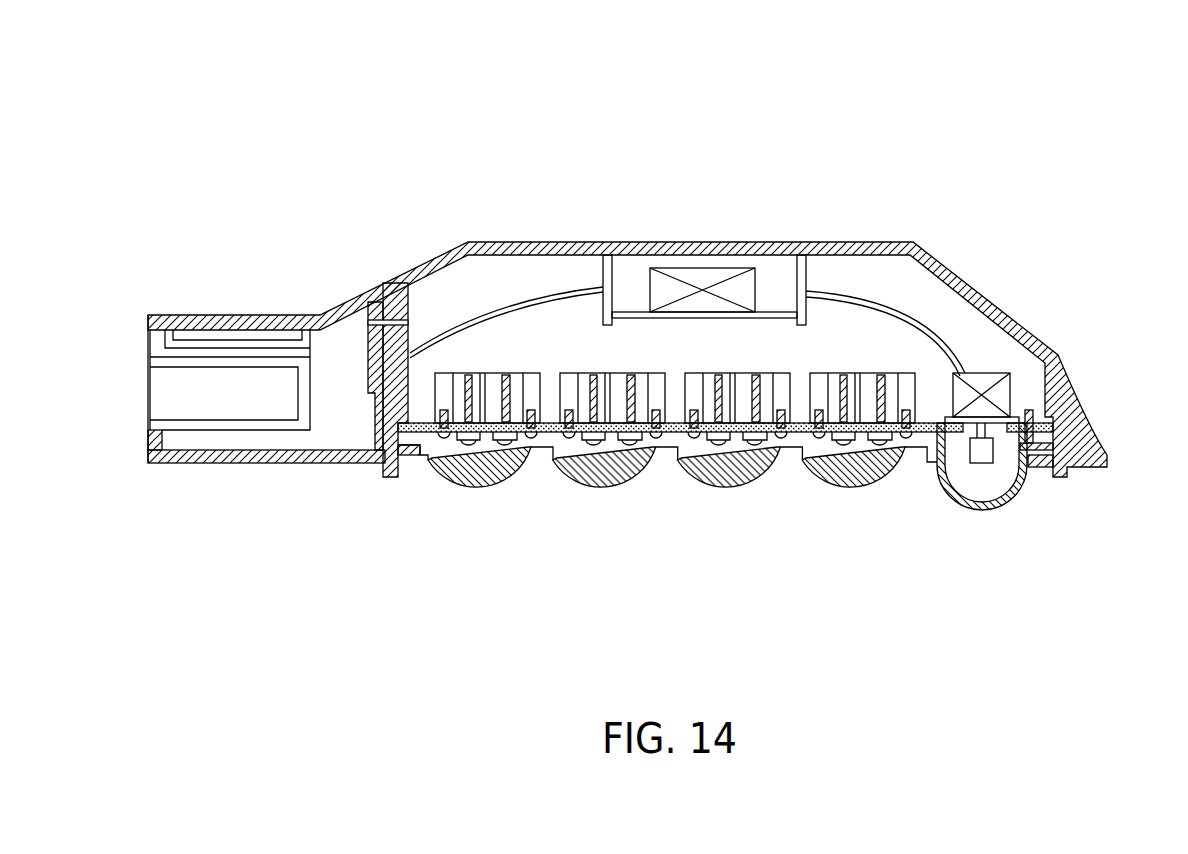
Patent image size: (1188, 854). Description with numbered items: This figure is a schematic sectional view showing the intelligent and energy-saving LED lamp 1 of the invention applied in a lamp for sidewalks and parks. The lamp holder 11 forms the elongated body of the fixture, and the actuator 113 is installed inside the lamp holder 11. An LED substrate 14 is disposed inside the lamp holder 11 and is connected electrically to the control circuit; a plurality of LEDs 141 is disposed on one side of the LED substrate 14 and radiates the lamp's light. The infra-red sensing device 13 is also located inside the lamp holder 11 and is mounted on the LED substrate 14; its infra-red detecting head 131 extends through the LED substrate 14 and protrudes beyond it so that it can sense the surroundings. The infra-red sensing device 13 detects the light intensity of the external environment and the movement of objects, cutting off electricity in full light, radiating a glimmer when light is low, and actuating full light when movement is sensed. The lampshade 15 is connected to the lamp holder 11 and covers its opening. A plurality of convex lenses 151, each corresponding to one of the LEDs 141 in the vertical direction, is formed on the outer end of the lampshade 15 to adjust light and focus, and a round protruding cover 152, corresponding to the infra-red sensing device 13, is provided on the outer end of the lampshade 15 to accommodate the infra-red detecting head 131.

The LED lamp 1 is at (1000, 105).
The lamp holder 11 is at (820, 243).
The actuator 113 is at (700, 277).
The infra-red sensing device 13 is at (997, 382).
The infra-red detecting head 131 is at (988, 457).
The LED substrate 14 is at (923, 423).
The LEDs 141 is at (817, 477).
The lampshade 15 is at (741, 535).
The convex lenses 151 is at (612, 482).
The protruding cover 152 is at (978, 512).